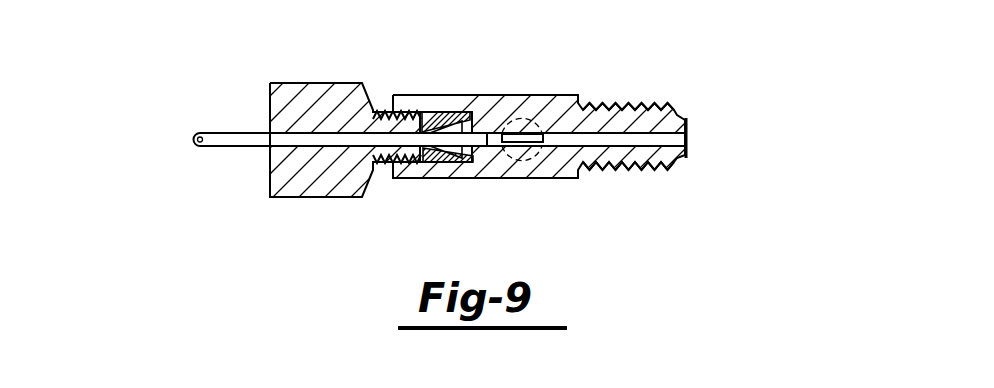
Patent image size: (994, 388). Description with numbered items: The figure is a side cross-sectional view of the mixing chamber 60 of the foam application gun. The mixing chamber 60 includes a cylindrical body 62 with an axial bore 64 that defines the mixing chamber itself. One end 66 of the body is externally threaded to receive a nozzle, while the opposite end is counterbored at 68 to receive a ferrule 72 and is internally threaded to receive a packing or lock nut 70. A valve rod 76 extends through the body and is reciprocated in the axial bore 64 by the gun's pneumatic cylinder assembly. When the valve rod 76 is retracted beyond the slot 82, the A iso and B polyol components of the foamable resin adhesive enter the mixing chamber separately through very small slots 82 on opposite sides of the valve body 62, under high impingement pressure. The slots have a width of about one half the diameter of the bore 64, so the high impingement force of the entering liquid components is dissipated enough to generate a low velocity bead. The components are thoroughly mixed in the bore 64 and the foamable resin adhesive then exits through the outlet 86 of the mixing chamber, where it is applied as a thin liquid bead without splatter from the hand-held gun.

The mixing chamber 60 is at (418, 78).
The cylindrical body 62 is at (549, 103).
The axial bore 64 is at (578, 138).
The end 66 is at (630, 172).
The counterbore 68 is at (413, 160).
The packing or lock nut 70 is at (314, 103).
The ferrule 72 is at (447, 115).
The valve rod 76 is at (240, 142).
The slot 82 is at (517, 143).
The outlet 86 is at (678, 132).